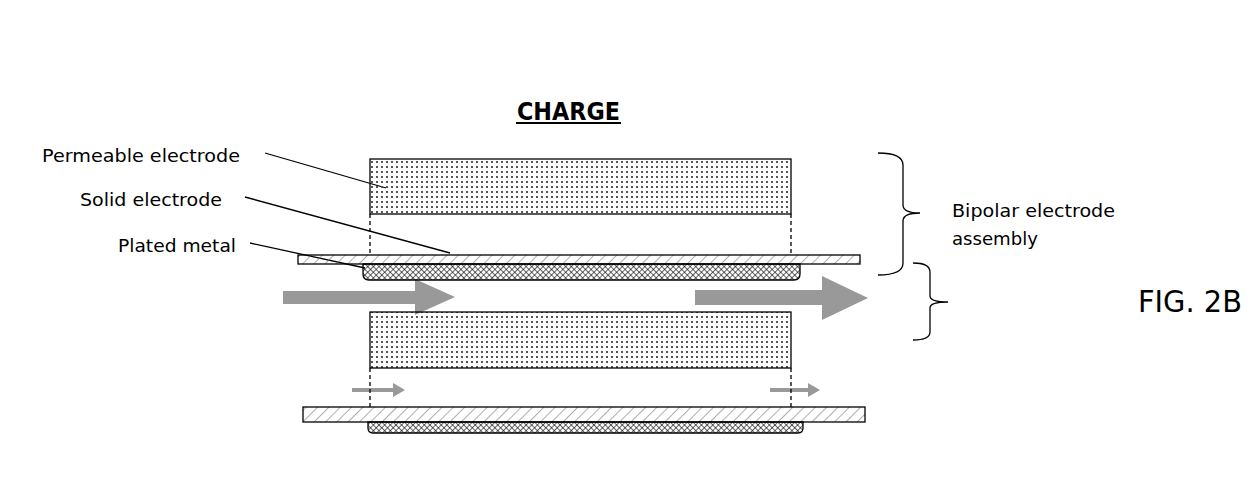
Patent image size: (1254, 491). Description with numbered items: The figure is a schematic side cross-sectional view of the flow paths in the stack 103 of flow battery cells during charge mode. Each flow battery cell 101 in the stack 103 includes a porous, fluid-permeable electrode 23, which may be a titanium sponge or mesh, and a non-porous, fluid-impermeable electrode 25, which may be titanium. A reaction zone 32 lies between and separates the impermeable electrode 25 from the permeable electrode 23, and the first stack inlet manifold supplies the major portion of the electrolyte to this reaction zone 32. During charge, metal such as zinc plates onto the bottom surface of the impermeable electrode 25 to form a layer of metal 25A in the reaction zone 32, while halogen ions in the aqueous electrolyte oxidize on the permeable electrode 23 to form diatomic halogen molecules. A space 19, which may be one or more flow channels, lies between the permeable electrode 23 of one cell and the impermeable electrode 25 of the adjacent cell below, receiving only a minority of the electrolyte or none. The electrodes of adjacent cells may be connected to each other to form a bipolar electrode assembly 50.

The stack 103 is at (902, 33).
The permeable electrode 23 is at (791, 159).
The impermeable electrode 25 is at (860, 255).
The layer of metal 25A is at (797, 278).
The space 19 is at (585, 311).
The reaction zone 32 is at (582, 297).
The bipolar electrode assembly 50 is at (939, 214).
The flow battery cell 101 is at (949, 301).